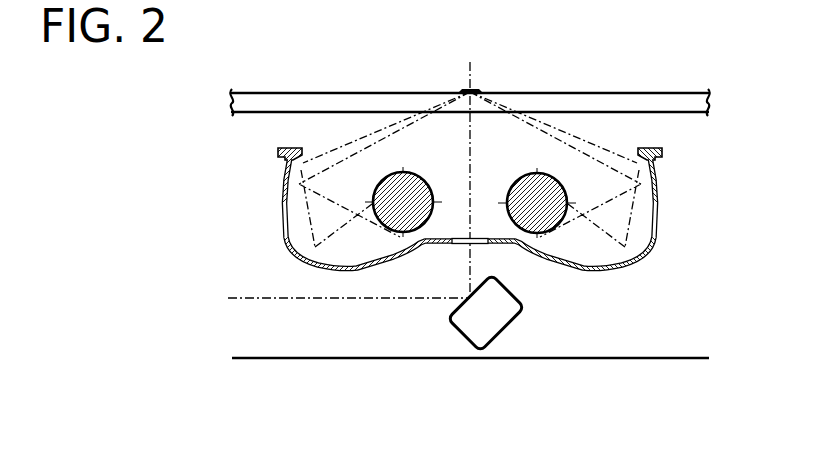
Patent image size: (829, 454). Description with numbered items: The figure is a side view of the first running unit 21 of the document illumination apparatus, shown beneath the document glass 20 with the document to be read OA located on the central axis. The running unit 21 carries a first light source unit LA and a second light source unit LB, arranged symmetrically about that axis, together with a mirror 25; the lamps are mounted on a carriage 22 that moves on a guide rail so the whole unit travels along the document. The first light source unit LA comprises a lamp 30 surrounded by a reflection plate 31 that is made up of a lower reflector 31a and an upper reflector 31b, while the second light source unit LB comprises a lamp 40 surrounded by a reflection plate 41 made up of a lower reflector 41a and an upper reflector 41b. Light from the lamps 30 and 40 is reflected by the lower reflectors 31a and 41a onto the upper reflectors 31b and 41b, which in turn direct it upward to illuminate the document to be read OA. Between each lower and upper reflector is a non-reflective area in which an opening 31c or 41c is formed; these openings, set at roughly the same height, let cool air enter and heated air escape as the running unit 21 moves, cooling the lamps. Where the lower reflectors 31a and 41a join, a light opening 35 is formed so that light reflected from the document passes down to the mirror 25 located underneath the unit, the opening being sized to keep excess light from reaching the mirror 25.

The light guide plate 20 is at (617, 92).
The first running unit 21 is at (699, 88).
The carriage 22 is at (295, 360).
The mirror 25 is at (450, 320).
The lamp 30 is at (522, 177).
The reflection plate 31 is at (604, 246).
The lower reflector 31a is at (568, 268).
The upper reflector 31b is at (658, 173).
The opening 31c is at (658, 221).
The light opening 35 is at (470, 238).
The lamp 40 is at (421, 178).
The reflection plate 41 is at (335, 246).
The lower reflector 41a is at (372, 270).
The upper reflector 41b is at (282, 171).
The opening 41c is at (282, 220).
The document to be read OA is at (356, 164).
The first light source unit LA is at (640, 262).
The second light source unit LB is at (290, 262).